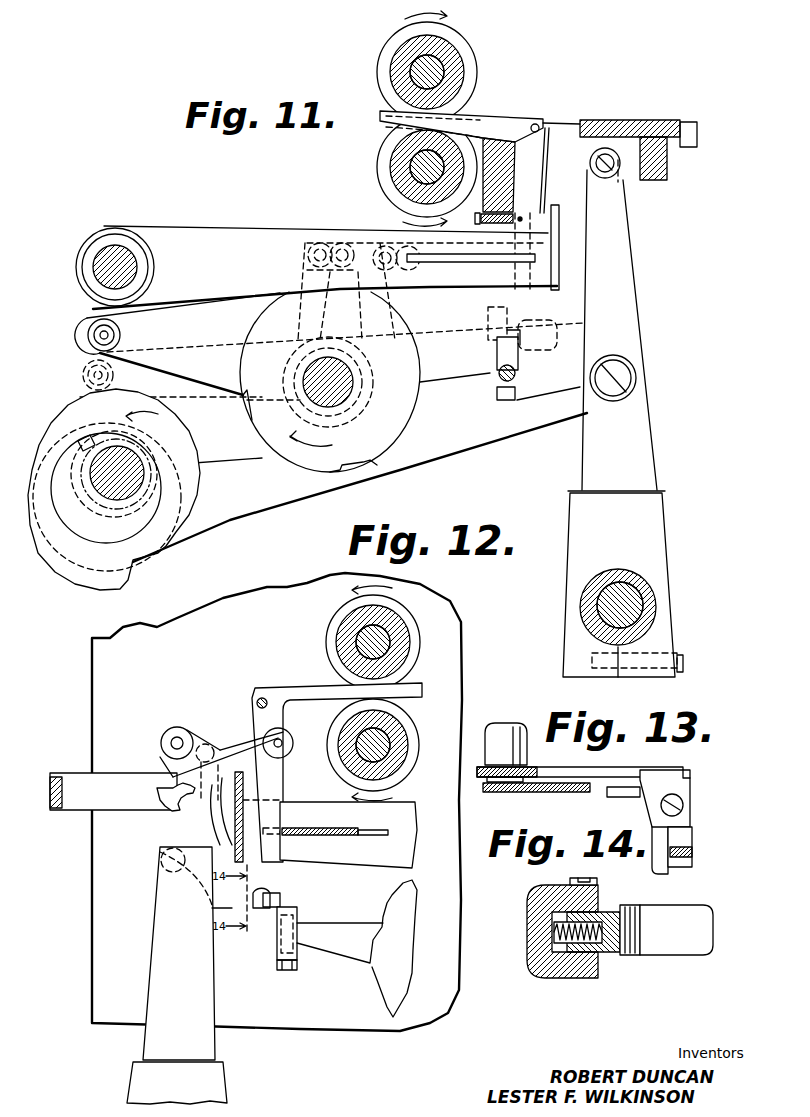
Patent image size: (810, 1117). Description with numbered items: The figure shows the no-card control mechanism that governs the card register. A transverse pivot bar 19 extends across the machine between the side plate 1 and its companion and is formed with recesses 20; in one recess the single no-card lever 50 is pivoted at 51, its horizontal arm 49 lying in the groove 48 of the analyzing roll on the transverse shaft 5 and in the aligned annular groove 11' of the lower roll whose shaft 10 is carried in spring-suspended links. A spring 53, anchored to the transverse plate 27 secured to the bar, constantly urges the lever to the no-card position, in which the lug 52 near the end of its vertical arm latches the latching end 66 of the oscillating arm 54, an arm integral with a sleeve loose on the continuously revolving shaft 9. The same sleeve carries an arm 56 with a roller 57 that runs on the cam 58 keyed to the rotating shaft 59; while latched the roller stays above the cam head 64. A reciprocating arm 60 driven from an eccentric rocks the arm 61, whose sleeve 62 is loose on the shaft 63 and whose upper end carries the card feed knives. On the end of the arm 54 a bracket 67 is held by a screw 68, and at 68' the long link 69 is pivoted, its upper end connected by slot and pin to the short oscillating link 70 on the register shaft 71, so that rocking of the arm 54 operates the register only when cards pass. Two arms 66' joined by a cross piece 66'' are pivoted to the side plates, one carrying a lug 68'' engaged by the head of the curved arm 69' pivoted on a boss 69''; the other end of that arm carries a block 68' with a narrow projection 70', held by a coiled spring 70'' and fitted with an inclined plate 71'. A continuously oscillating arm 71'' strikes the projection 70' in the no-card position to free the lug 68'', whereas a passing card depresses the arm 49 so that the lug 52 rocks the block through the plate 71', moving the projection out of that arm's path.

In FIG. 12, the side plate 1 is at (198, 627).
In FIG. 12, the transverse shaft 5 is at (383, 645).
In FIG. 11, the shaft 9 is at (346, 394).
In FIG. 12, the shaft 10 is at (383, 737).
In FIG. 11, the annular groove 11' is at (407, 171).
In FIG. 12, the annular groove 11' is at (363, 750).
In FIG. 11, the pivot bar 19 is at (511, 161).
In FIG. 11, the recess 20 is at (514, 179).
In FIG. 11, the transverse plate 27 is at (404, 201).
In FIG. 11, the groove 48 is at (467, 66).
In FIG. 12, the groove 48 is at (412, 627).
In FIG. 11, the horizontal arm 49 is at (468, 114).
In FIG. 12, the horizontal arm 49 is at (310, 697).
In FIG. 11, the no-card lever 50 is at (508, 122).
In FIG. 12, the no-card lever 50 is at (280, 688).
In FIG. 11, the pivot 51 is at (539, 124).
In FIG. 12, the pivot 51 is at (257, 700).
In FIG. 11, the lug 52 is at (546, 326).
In FIG. 12, the lug 52 is at (278, 897).
In FIG. 13, the lug 52 is at (690, 843).
In FIG. 11, the spring 53 is at (485, 224).
In FIG. 11, the oscillating arm 54 is at (462, 374).
In FIG. 12, the oscillating arm 54 is at (346, 948).
In FIG. 11, the arm 56 is at (168, 333).
In FIG. 11, the roller 57 is at (85, 342).
In FIG. 11, the cam 58 is at (63, 425).
In FIG. 11, the shaft 59 is at (104, 492).
In FIG. 11, the reciprocating arm 60 is at (498, 433).
In FIG. 11, the rockable arm 61 is at (620, 260).
In FIG. 12, the rockable arm 61 is at (203, 1011).
In FIG. 11, the sleeve 62 is at (650, 588).
In FIG. 11, the shaft 63 is at (637, 616).
In FIG. 11, the cam head 64 is at (89, 580).
In FIG. 11, the latching end 66 is at (535, 353).
In FIG. 12, the arm 66' is at (135, 846).
In FIG. 12, the cross piece 66'' is at (106, 812).
In FIG. 11, the bracket 67 is at (500, 340).
In FIG. 12, the bracket 67 is at (292, 917).
In FIG. 11, the screw 68 is at (520, 408).
In FIG. 11, the block 68' is at (528, 383).
In FIG. 12, the block 68' is at (203, 868).
In FIG. 13, the block 68' is at (635, 822).
In FIG. 14, the block 68' is at (539, 928).
In FIG. 12, the lug 68'' is at (156, 782).
In FIG. 12, the link 69 is at (251, 951).
In FIG. 12, the curved arm 69' is at (169, 839).
In FIG. 13, the curved arm 69' is at (536, 802).
In FIG. 12, the boss 69'' is at (141, 913).
In FIG. 13, the boss 69'' is at (506, 728).
In FIG. 12, the oscillating link 70 is at (226, 755).
In FIG. 13, the projection 70' is at (638, 756).
In FIG. 13, the coiled spring 70'' is at (700, 765).
In FIG. 14, the coiled spring 70'' is at (577, 960).
In FIG. 12, the shaft 71 is at (169, 730).
In FIG. 12, the inclined plate 71' is at (289, 874).
In FIG. 14, the inclined plate 71' is at (669, 916).
In FIG. 12, the continuously oscillating arm 71'' is at (131, 998).
In FIG. 13, the continuously oscillating arm 71'' is at (580, 795).